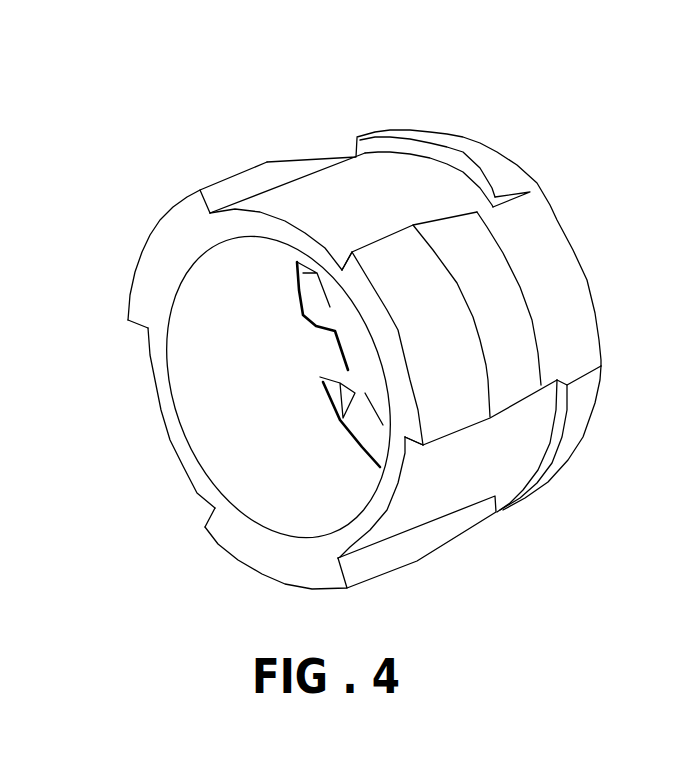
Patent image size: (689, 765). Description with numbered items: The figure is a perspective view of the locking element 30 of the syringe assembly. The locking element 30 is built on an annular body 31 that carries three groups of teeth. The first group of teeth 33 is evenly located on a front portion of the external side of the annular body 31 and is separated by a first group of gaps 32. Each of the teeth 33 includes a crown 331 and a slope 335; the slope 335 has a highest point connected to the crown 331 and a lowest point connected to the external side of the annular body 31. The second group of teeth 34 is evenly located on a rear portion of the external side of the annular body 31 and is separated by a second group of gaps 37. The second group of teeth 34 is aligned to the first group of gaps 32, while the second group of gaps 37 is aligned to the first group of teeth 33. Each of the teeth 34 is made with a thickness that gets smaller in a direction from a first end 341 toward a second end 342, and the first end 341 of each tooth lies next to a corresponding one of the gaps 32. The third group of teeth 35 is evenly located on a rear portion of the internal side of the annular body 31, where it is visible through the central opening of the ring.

The locking element 30 is at (113, 224).
The annular body 31 is at (167, 423).
The first group of gaps 32 is at (347, 200).
The first group of teeth 33 is at (339, 315).
The crown 331 is at (220, 178).
The slope 335 is at (308, 121).
The second group of teeth 34 is at (518, 298).
The first end 341 is at (447, 167).
The second end 342 is at (523, 175).
The third group of teeth 35 is at (290, 303).
The second group of gaps 37 is at (560, 267).